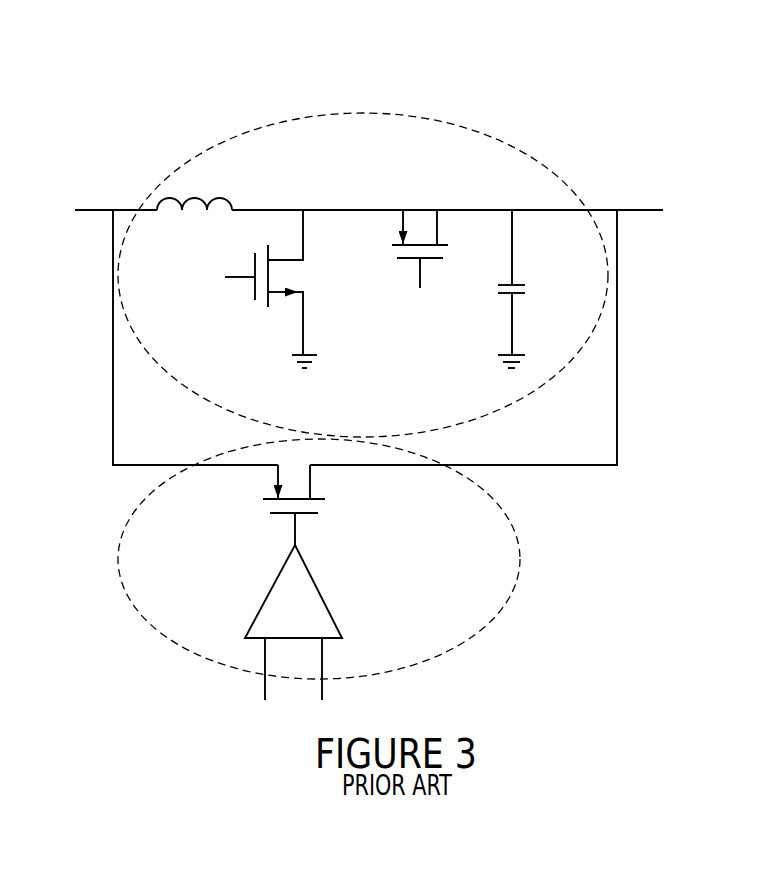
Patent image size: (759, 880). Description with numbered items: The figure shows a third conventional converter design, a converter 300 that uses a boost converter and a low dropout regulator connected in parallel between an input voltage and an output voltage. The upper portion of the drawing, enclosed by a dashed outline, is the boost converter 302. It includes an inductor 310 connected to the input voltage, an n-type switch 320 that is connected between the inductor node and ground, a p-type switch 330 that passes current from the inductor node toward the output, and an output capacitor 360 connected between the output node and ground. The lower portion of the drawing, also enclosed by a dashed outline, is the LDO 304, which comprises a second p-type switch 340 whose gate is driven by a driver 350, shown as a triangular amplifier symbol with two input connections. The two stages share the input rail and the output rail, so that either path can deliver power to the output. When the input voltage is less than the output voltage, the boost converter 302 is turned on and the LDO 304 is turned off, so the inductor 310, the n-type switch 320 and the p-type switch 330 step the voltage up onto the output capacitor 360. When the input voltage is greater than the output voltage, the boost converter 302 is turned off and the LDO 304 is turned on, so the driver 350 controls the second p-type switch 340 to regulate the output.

The converter 300 is at (658, 101).
The boost converter 302 is at (487, 127).
The LDO 304 is at (465, 643).
The inductor 310 is at (218, 199).
The n-type switch N1 320 is at (262, 302).
The p-type switch 330 is at (438, 197).
The p-type switch P2 340 is at (266, 504).
The driver 350 is at (321, 590).
The output capacitor C_out 360 is at (520, 301).